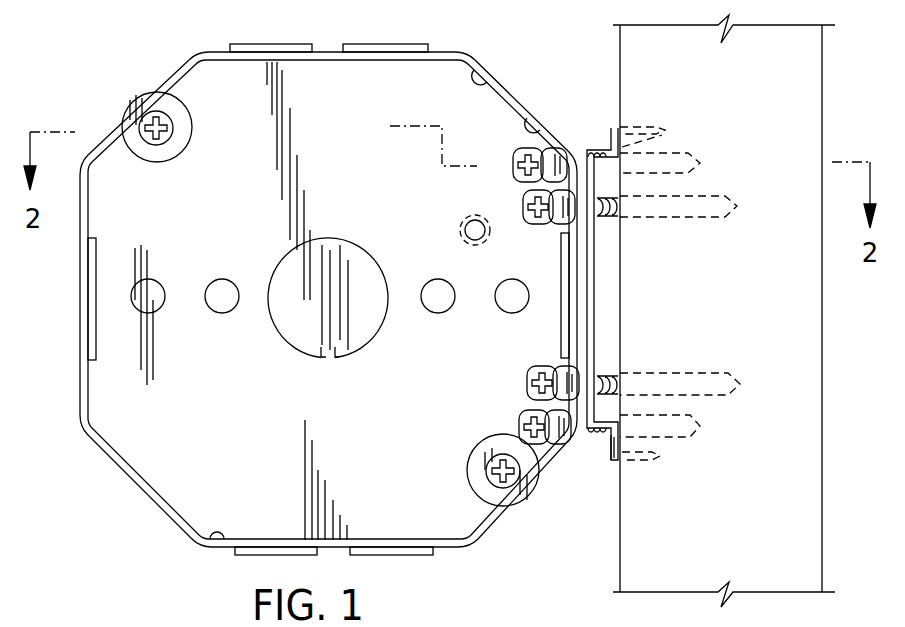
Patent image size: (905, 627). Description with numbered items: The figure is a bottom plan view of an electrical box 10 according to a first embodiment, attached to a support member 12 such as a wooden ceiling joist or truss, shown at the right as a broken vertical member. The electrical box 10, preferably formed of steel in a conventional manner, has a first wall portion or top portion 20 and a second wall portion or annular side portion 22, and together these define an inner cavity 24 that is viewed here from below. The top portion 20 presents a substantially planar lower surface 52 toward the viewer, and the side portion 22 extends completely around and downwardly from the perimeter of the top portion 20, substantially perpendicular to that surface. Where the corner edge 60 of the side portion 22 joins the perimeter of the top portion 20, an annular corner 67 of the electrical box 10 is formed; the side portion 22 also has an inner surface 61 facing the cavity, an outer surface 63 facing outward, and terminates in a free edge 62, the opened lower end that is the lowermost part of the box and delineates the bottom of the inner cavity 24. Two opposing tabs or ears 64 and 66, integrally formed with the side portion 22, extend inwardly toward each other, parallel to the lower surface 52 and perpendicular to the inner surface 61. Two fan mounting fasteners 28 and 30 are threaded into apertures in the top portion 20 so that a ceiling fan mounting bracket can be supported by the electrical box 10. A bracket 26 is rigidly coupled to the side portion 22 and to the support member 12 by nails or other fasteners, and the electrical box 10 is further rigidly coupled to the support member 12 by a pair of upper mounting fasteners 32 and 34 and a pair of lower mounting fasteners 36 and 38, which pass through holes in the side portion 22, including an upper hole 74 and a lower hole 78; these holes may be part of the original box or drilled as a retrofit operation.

The electrical box 10 is at (100, 82).
The support member 12 is at (734, 251).
The top portion 20 is at (182, 432).
The side portion 22 is at (153, 518).
The inner cavity 24 is at (140, 413).
The bracket 26 is at (619, 270).
The fan mounting fastener 28 is at (176, 118).
The fan mounting fastener 30 is at (488, 457).
The upper mounting fastener 32 is at (516, 163).
The upper mounting fastener 34 is at (528, 420).
The lower mounting fastener 36 is at (525, 203).
The lower mounting fastener 38 is at (530, 378).
The lower surface 52 is at (317, 172).
The corner edge 60 is at (535, 116).
The inner surface 61 is at (213, 533).
The free edge 62 is at (204, 52).
The outer surface 63 is at (598, 312).
The tab 64 is at (155, 162).
The tab 66 is at (467, 480).
The annular corner 67 is at (482, 70).
The upper hole 74 is at (588, 440).
The lower hole 78 is at (605, 370).